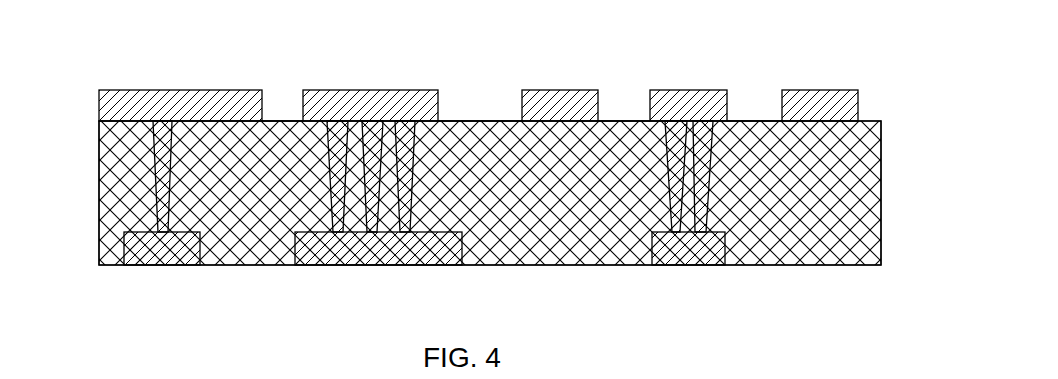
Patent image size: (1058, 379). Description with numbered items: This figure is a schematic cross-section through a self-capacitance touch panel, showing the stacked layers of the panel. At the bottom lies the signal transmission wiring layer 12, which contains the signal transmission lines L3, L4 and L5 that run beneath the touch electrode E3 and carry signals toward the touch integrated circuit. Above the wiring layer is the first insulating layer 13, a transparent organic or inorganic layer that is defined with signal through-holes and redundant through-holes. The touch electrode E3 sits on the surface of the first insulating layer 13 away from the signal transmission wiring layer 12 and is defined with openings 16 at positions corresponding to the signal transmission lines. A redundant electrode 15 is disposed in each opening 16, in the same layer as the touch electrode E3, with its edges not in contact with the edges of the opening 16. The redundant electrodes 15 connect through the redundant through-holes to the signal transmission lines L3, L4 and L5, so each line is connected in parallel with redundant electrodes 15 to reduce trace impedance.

The signal transmission wiring layer 12 is at (112, 245).
The first insulating layer 13 is at (860, 217).
The redundant electrode 15 is at (367, 103).
The opening 16 is at (278, 108).
The touch electrode E3 is at (140, 102).
The signal transmission line L3 is at (163, 247).
The signal transmission line L4 is at (377, 245).
The signal transmission line L5 is at (682, 245).